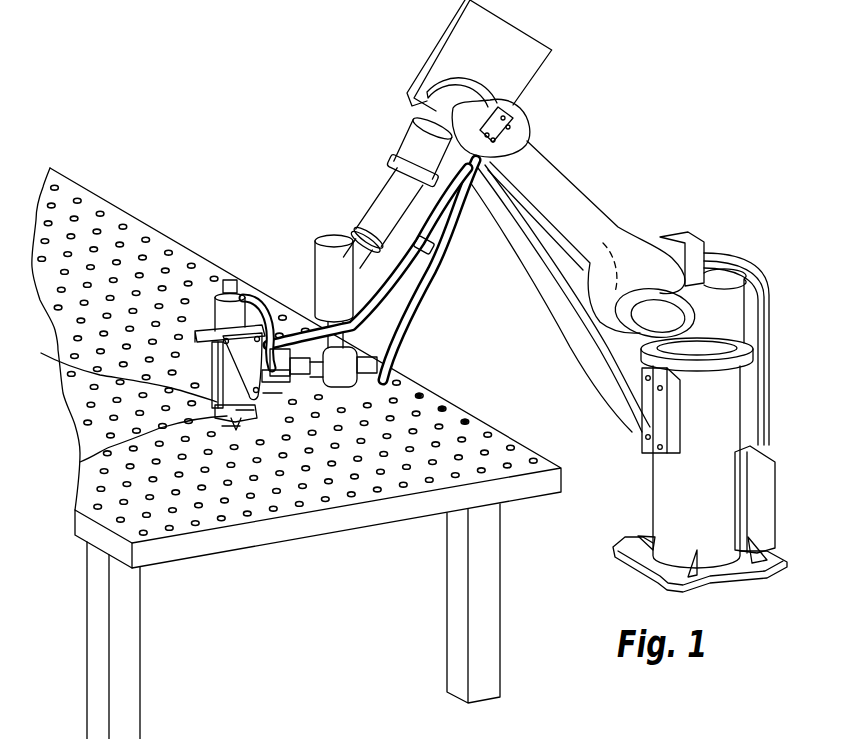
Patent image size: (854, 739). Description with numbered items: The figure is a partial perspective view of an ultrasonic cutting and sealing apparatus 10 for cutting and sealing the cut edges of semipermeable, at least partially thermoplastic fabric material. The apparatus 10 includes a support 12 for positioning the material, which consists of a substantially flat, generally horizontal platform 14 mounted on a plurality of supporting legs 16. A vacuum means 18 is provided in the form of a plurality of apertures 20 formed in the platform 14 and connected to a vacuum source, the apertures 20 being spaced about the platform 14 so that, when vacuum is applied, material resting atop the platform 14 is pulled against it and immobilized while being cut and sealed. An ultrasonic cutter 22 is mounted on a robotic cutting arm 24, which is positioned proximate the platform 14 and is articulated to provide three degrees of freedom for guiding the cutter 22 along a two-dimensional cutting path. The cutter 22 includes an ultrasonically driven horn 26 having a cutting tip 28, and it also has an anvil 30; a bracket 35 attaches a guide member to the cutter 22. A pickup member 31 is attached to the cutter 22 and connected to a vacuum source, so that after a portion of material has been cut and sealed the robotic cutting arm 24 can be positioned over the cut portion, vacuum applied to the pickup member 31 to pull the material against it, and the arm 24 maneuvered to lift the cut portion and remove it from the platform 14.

The ultrasonic cutting and sealing apparatus 10 is at (298, 148).
The support 12 is at (195, 196).
The platform 14 is at (528, 440).
The supporting legs 16 is at (140, 683).
The vacuum means 18 is at (29, 184).
The apertures 20 is at (465, 419).
The ultrasonic cutter 22 is at (258, 263).
The robotic cutting arm 24 is at (548, 111).
The ultrasonically driven horn 26 is at (124, 365).
The cutting tip 28 is at (80, 462).
The anvil 30 is at (217, 413).
The pickup member 31 is at (283, 423).
The bracket 35 is at (240, 417).